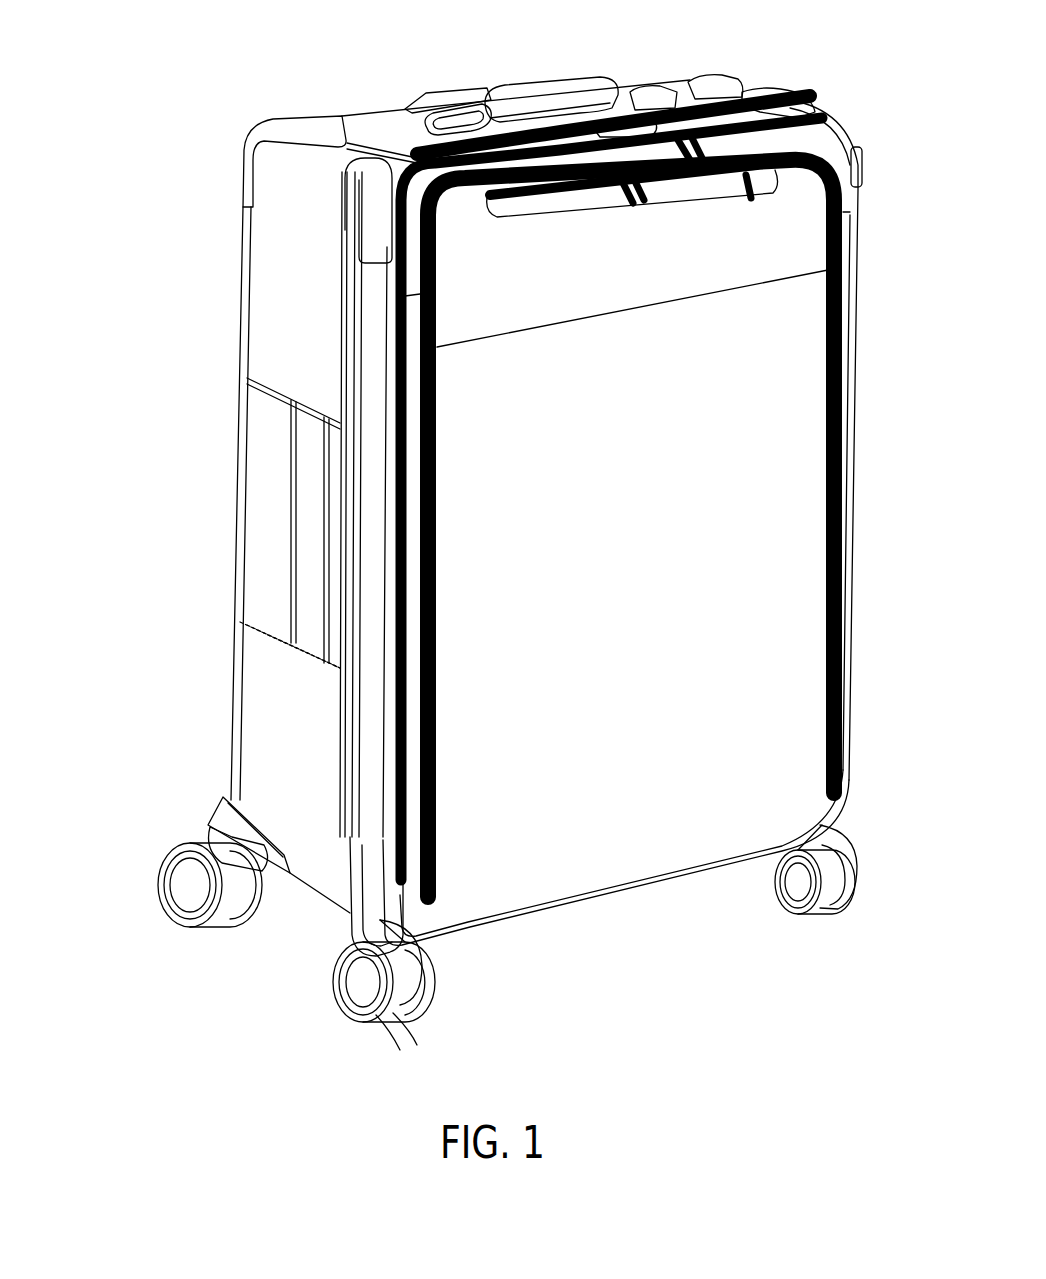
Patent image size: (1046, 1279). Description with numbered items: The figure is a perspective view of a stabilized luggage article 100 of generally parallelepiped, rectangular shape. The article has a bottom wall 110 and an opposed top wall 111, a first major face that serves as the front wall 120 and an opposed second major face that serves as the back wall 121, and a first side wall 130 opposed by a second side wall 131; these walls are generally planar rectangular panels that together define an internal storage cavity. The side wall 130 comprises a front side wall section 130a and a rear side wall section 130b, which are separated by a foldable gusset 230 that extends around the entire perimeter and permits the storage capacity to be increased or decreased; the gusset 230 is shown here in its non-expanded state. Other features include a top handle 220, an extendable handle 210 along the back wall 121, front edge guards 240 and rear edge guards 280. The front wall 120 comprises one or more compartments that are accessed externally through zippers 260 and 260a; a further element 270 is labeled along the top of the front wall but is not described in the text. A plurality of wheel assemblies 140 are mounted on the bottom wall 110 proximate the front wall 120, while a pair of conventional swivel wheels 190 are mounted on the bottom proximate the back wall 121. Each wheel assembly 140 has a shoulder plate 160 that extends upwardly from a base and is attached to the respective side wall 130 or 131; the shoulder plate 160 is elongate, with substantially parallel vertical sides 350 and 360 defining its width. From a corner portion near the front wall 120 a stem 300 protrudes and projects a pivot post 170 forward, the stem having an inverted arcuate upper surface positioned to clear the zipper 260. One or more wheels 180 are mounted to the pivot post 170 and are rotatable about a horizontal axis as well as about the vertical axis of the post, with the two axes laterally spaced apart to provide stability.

The stabilized luggage article 100 is at (888, 582).
The bottom wall 110 is at (592, 930).
The top wall 111 is at (367, 130).
The front wall 120 is at (765, 500).
The back wall 121 is at (206, 312).
The first side wall 130 is at (130, 645).
The front side wall section 130a is at (337, 777).
The rear side wall section 130b is at (282, 702).
The second side wall 131 is at (876, 298).
The wheel assembly 140 is at (793, 962).
The shoulder plate 160 is at (358, 916).
The pivot post 170 is at (417, 995).
The wheels 180 is at (398, 1015).
The swivel wheels 190 is at (128, 873).
The extendable handle 210 is at (470, 96).
The top handle 220 is at (557, 100).
The foldable gusset 230 is at (693, 107).
The front edge guards 240 is at (363, 227).
The zipper 260 is at (775, 163).
The zipper 260a is at (753, 200).
The zipper tape 270 is at (778, 113).
The rear edge guards 280 is at (257, 143).
The stem portion 300 is at (402, 945).
The vertical side of shoulder plate 350 is at (372, 930).
The vertical side of shoulder plate 360 is at (333, 915).